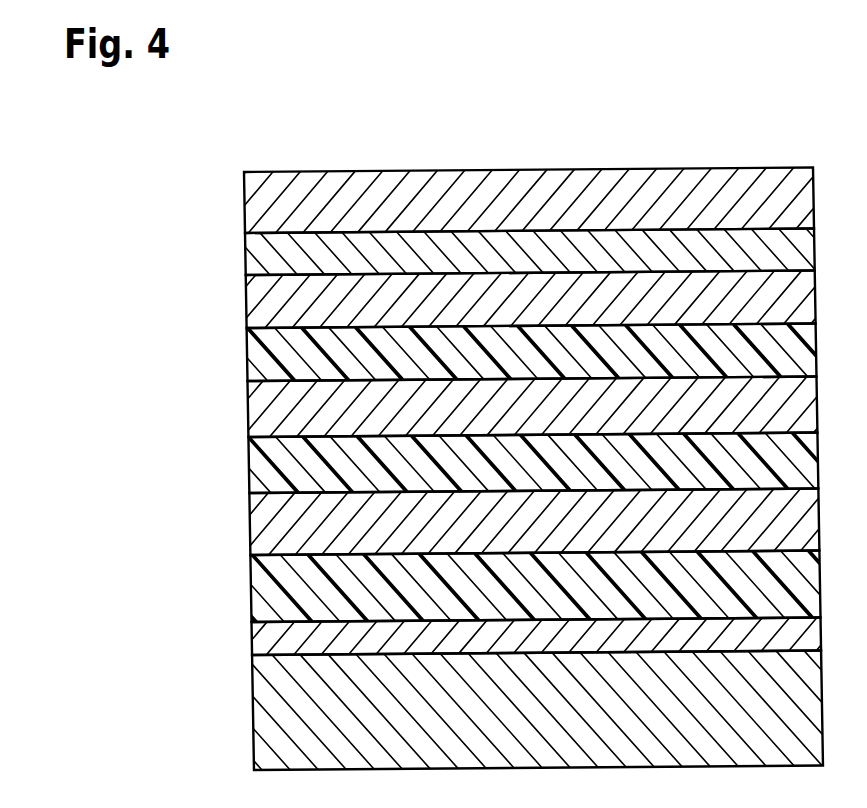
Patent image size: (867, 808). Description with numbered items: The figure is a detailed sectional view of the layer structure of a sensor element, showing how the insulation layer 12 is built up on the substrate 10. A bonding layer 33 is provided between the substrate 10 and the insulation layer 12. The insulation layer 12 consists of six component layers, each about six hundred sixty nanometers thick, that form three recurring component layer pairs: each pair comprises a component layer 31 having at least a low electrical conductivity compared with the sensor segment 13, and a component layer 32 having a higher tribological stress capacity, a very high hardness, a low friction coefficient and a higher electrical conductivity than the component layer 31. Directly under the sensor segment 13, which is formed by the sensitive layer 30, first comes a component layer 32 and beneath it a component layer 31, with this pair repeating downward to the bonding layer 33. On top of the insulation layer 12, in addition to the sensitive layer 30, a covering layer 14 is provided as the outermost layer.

The substrate 10 is at (272, 713).
The insulation layer 12 is at (443, 463).
The sensor segment 13 is at (490, 251).
The covering layer 14 is at (266, 204).
The sensitive layer 30 is at (266, 258).
The component layer with low electrical conductivity 31 is at (266, 355).
The component layer with higher tribological stress capacity 32 is at (266, 301).
The bonding layer 33 is at (505, 636).